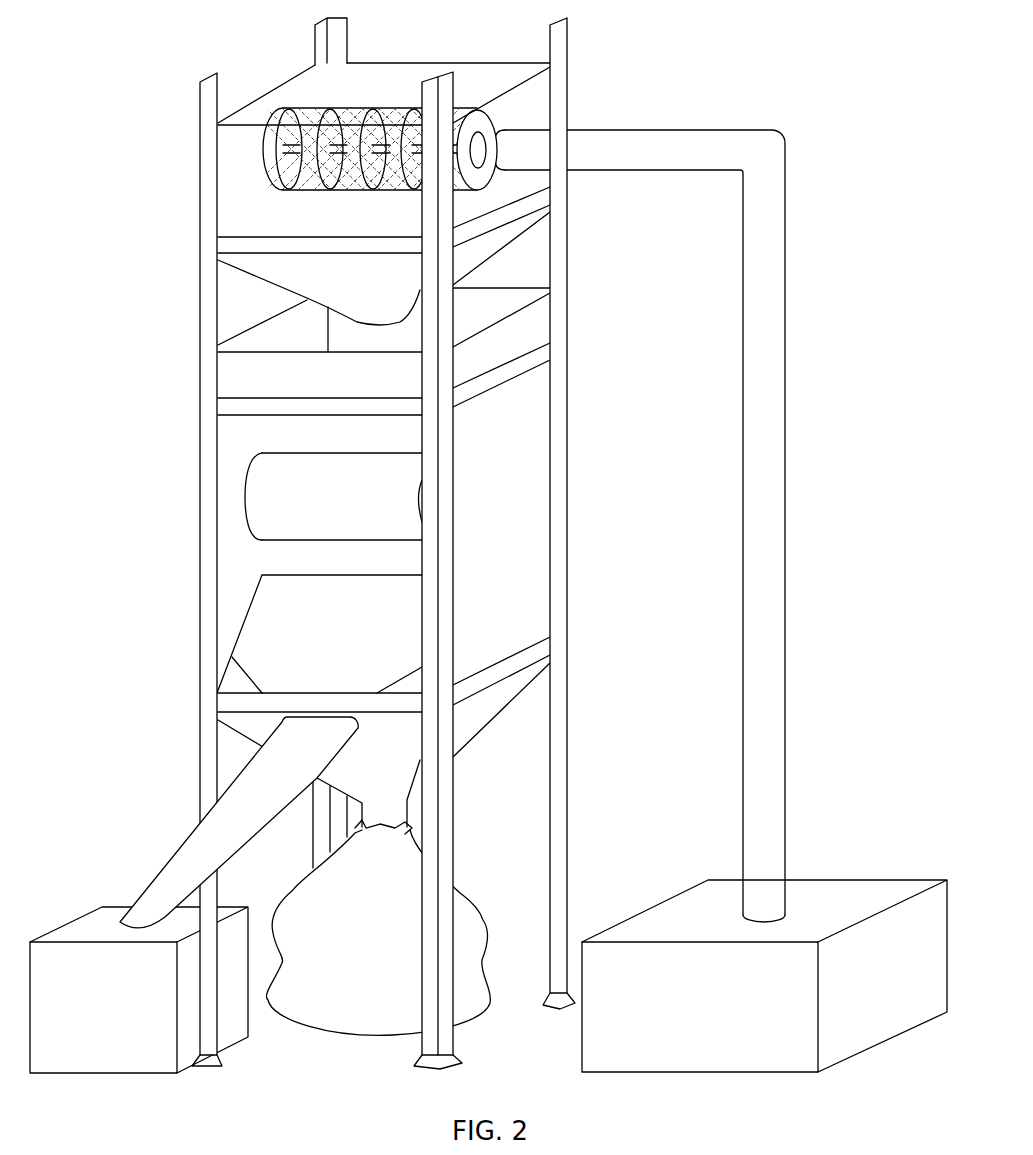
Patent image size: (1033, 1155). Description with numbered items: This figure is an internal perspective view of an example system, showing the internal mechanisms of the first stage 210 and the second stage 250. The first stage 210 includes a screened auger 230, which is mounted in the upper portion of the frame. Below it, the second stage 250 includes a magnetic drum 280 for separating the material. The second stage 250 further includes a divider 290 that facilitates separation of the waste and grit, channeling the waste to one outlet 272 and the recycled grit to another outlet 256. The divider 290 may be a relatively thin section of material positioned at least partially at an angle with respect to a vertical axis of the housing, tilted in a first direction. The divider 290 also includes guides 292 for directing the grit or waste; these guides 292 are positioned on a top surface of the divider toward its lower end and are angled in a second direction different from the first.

The first stage 210 is at (132, 198).
The screened auger 230 is at (283, 125).
The second stage 250 is at (132, 565).
The outlet 256 is at (402, 826).
The outlet 272 is at (280, 723).
The magnetic drum 280 is at (260, 497).
The divider 290 is at (260, 630).
The guides 292 is at (233, 678).